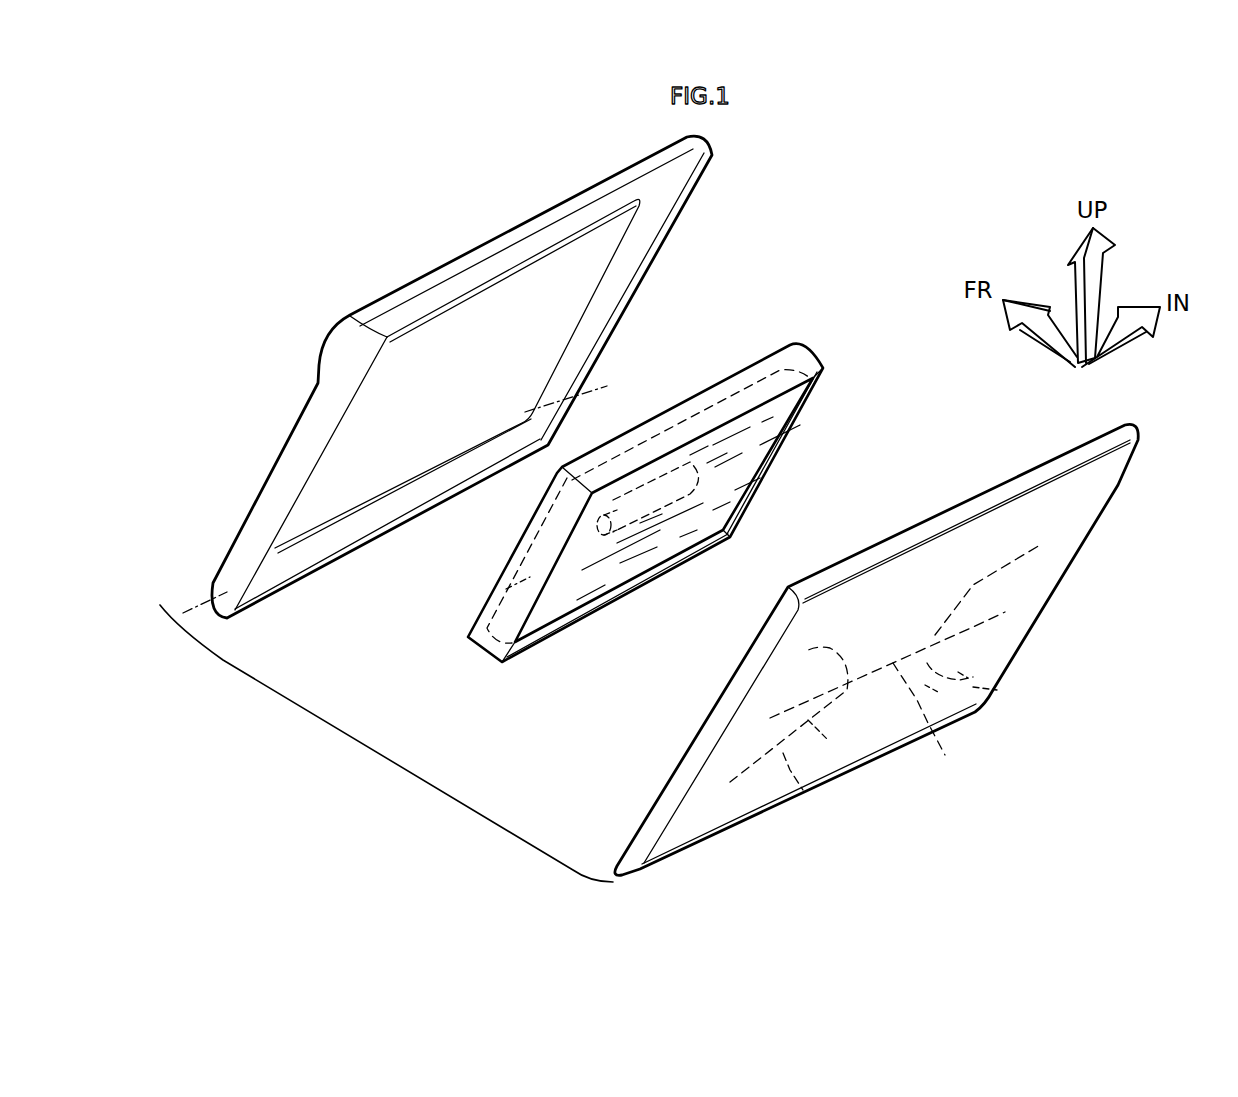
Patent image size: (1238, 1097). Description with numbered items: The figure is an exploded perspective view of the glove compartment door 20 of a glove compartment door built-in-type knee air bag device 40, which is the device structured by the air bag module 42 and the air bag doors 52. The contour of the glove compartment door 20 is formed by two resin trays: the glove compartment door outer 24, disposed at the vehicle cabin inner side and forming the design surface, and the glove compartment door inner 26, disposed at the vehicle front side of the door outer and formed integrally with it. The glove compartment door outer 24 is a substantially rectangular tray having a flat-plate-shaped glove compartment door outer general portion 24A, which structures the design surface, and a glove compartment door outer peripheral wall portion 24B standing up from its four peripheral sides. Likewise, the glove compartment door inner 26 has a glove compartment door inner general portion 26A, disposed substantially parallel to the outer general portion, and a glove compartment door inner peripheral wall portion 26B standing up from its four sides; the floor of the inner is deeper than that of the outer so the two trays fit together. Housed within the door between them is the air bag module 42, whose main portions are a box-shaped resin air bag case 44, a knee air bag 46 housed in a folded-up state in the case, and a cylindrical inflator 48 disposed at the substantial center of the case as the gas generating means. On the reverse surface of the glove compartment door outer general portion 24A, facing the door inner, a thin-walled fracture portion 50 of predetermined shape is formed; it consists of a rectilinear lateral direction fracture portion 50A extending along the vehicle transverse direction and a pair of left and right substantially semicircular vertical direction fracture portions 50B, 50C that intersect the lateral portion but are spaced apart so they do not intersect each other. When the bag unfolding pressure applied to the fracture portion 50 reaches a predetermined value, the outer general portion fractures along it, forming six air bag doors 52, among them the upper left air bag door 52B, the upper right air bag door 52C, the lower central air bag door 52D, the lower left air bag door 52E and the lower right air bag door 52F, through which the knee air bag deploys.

The glove compartment door 20 is at (374, 750).
The glove compartment door outer 24 is at (904, 640).
The glove compartment door outer general portion 24A is at (1043, 520).
The glove compartment door outer peripheral wall portion 24B is at (1038, 477).
The glove compartment door inner 26 is at (447, 377).
The glove compartment door inner general portion 26A is at (377, 474).
The glove compartment door inner peripheral wall portion 26B is at (272, 503).
The glove compartment door built-in-type knee air bag device 40 is at (804, 563).
The air bag module 42 is at (686, 468).
The air bag case 44 is at (720, 403).
The knee air bag 46 is at (580, 582).
The inflator 48 is at (653, 510).
The fracture portion 50 is at (915, 788).
The lateral direction fracture portion 50A is at (925, 685).
The vertical direction fracture portion 50B is at (803, 790).
The vertical direction fracture portion 50C is at (980, 687).
The air bag doors 52 is at (897, 653).
The upper left air bag door 52B is at (803, 682).
The upper right air bag door 52C is at (987, 592).
The lower central air bag door 52D is at (877, 693).
The lower left air bag door 52E is at (808, 722).
The lower right air bag door 52F is at (960, 650).